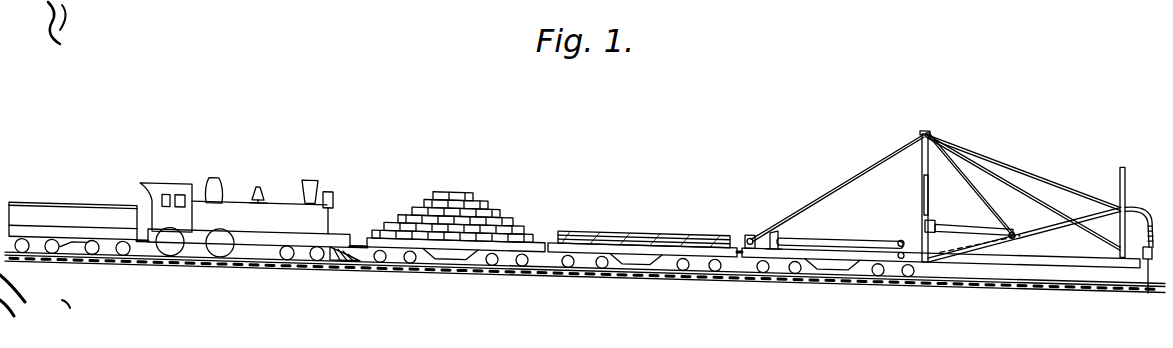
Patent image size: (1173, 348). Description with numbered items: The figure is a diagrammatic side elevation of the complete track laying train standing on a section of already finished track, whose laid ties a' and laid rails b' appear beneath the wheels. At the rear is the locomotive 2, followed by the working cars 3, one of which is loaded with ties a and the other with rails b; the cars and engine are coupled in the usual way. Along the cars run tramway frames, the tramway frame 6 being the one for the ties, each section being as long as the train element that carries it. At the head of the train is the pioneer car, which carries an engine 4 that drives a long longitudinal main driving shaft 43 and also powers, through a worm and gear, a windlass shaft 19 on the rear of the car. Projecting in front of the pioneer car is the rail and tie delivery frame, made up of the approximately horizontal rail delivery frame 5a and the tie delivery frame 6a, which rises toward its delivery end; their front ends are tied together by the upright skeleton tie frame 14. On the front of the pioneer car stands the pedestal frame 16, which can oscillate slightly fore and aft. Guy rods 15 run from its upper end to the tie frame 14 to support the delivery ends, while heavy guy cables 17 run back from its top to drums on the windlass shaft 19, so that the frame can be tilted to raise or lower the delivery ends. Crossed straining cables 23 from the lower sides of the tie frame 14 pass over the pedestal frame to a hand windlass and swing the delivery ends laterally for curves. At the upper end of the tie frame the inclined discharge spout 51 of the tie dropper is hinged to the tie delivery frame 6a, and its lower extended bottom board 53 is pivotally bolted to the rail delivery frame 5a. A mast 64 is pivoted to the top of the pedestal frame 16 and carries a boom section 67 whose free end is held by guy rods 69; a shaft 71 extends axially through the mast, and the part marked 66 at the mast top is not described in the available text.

The locomotive 2 is at (230, 209).
The ties a is at (452, 201).
The working cars 3 is at (513, 234).
The rails b is at (644, 218).
The tramway frame for the ties 6 is at (707, 232).
The laid ties a' is at (585, 289).
The laid rails b' is at (585, 287).
The rail delivery tramway frame 5a is at (1082, 234).
The windlass shaft 19 is at (749, 215).
The engine 4 is at (773, 210).
The main driving shaft 43 is at (868, 217).
The pedestal frame 16 is at (922, 164).
The mast 64 is at (928, 180).
The shaft 71 is at (921, 108).
The mast head pulley 66 is at (931, 109).
The guy cables 17 is at (855, 153).
The guy rods 69 is at (966, 152).
The guy rods 15 is at (1035, 160).
The crossed straining cables 23 is at (1024, 192).
The tie delivery tramway frame 6a is at (1075, 191).
The boom section 67 is at (968, 204).
The tie frame 14 is at (1125, 150).
The discharge spout 51 is at (1152, 180).
The bottom board 53 is at (1143, 282).